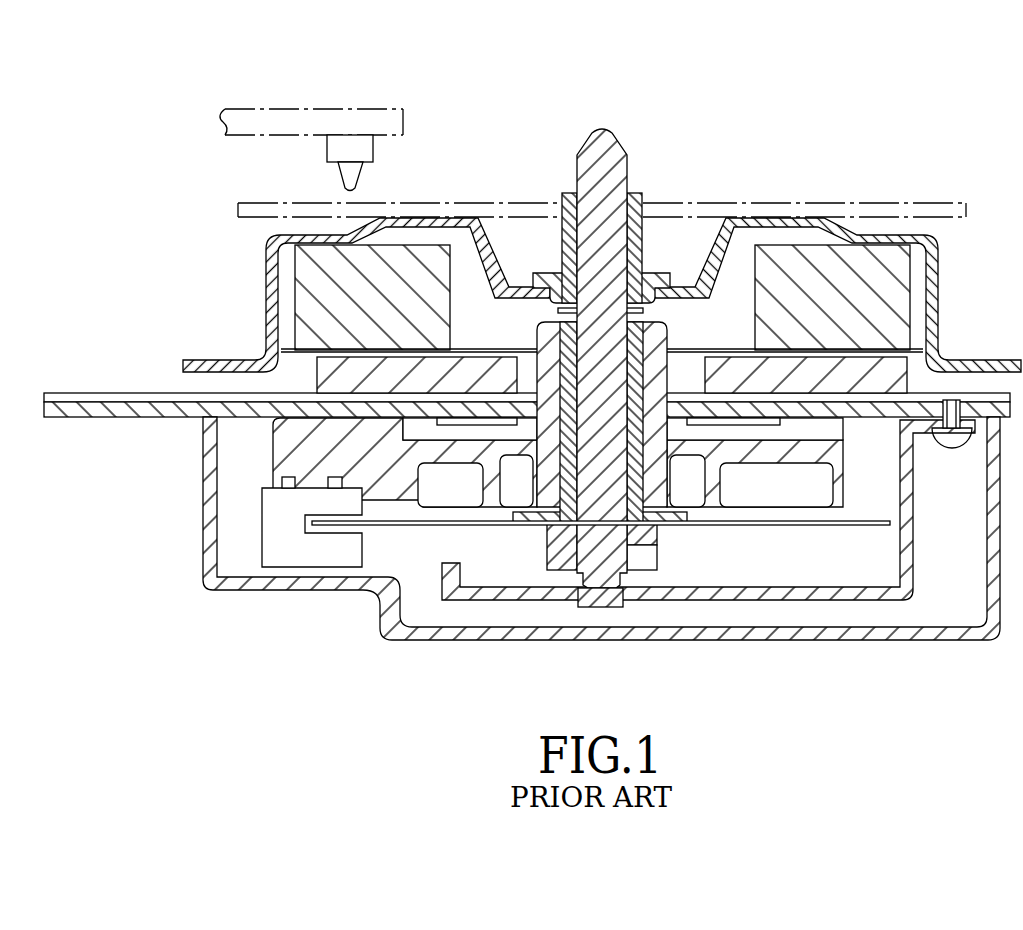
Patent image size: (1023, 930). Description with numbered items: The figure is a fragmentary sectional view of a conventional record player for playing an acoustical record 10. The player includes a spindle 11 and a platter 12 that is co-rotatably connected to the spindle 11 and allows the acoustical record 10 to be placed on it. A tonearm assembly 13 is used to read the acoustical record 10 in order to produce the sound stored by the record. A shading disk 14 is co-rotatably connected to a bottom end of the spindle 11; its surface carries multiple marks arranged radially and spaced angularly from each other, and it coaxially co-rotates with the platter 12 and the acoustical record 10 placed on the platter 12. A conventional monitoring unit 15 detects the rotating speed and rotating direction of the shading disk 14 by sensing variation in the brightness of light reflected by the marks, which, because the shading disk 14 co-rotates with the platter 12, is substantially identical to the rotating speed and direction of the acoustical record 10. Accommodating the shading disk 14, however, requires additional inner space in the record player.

The acoustical record 10 is at (878, 207).
The spindle 11 is at (610, 172).
The platter 12 is at (930, 267).
The tonearm assembly 13 is at (284, 114).
The shading disk 14 is at (867, 525).
The conventional monitoring unit 15 is at (284, 553).